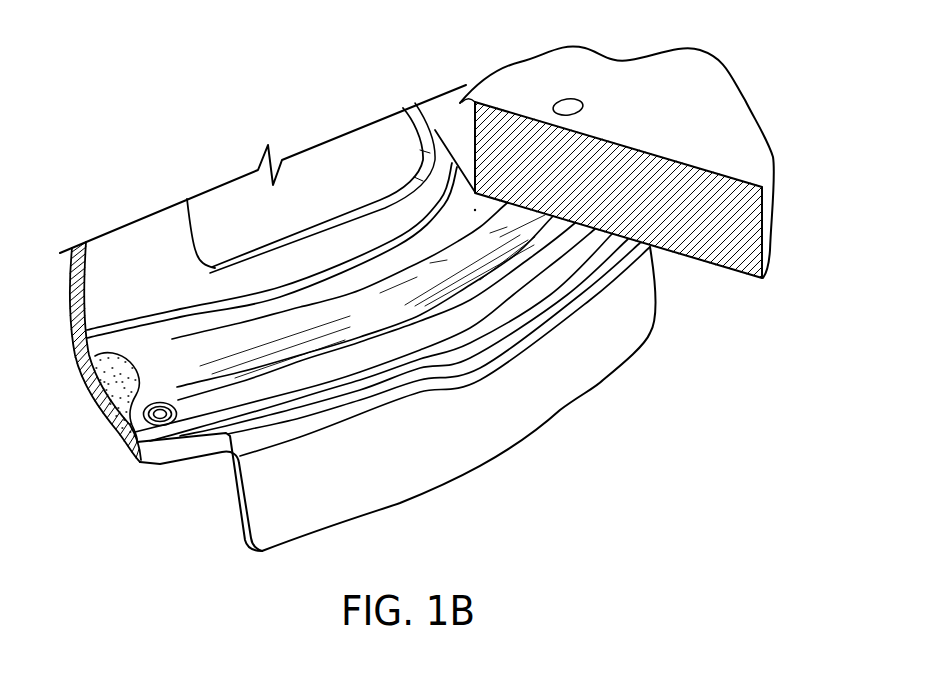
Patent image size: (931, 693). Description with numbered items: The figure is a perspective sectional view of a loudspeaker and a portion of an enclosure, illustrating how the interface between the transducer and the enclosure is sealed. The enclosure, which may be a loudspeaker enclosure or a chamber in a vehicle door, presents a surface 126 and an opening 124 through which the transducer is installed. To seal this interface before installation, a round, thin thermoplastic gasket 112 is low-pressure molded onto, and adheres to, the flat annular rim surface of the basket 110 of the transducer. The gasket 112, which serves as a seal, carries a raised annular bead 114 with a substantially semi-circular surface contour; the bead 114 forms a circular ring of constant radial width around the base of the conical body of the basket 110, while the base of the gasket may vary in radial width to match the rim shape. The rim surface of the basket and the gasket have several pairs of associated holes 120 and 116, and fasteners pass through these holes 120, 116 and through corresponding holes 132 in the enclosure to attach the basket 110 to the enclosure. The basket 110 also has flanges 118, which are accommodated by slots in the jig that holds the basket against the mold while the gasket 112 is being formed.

The basket 110 is at (305, 188).
The gasket 112 is at (315, 382).
The bead 114 is at (358, 322).
The holes 116 is at (162, 406).
The holes 120 is at (158, 403).
The flanges 118 is at (563, 350).
The opening 124 is at (473, 98).
The surface 126 is at (742, 284).
The holes 132 is at (580, 108).